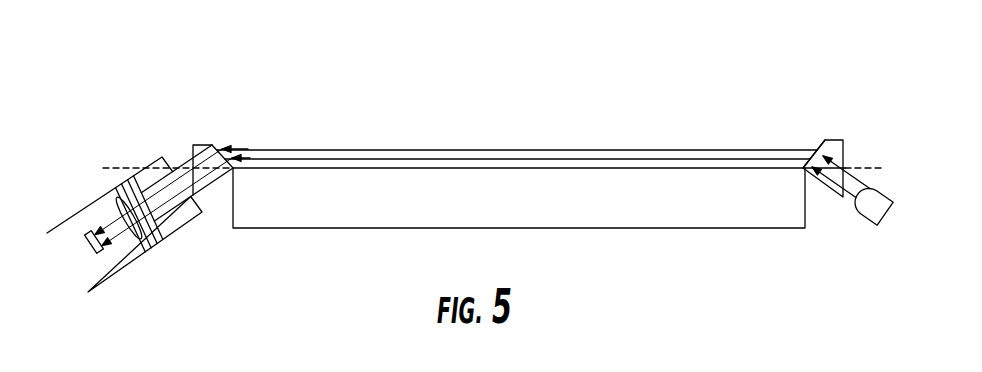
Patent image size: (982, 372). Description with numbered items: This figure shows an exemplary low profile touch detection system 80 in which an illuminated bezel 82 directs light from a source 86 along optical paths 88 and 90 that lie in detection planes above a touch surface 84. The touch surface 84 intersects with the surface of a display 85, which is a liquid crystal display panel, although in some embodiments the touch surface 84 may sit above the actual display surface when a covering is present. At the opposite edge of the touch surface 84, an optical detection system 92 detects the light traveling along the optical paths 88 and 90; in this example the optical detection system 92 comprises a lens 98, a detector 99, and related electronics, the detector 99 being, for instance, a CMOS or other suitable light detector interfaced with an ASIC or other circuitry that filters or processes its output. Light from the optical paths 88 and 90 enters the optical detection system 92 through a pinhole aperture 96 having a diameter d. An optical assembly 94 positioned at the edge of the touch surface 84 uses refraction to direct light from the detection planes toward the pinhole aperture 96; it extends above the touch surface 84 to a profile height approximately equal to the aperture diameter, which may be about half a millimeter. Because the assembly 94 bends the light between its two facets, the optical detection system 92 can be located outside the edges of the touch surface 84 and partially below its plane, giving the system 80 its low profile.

The touch detection system 80 is at (747, 77).
The illuminated bezel 82 is at (828, 140).
The touch surface 84 is at (493, 167).
The display 85 is at (342, 214).
The source 86 is at (874, 225).
The optical path 88 is at (468, 149).
The optical path 90 is at (583, 159).
The optical detection system 92 is at (172, 172).
The optical assembly 94 is at (212, 145).
The pinhole aperture 96 is at (192, 192).
The lens 98 is at (114, 205).
The detector 99 is at (82, 228).